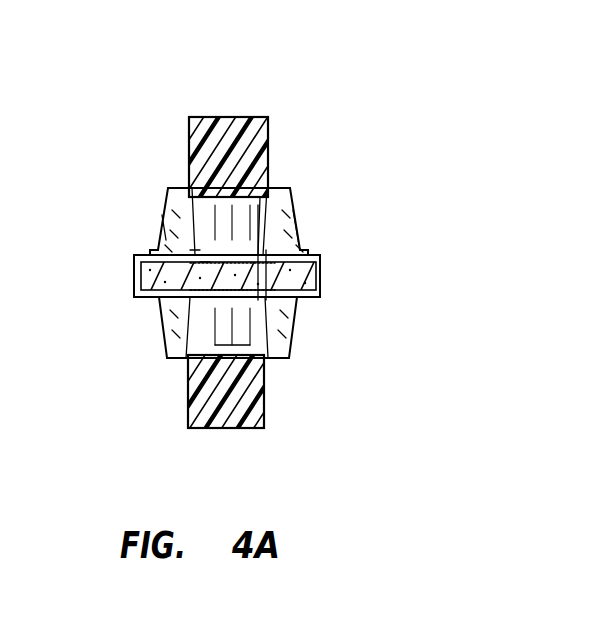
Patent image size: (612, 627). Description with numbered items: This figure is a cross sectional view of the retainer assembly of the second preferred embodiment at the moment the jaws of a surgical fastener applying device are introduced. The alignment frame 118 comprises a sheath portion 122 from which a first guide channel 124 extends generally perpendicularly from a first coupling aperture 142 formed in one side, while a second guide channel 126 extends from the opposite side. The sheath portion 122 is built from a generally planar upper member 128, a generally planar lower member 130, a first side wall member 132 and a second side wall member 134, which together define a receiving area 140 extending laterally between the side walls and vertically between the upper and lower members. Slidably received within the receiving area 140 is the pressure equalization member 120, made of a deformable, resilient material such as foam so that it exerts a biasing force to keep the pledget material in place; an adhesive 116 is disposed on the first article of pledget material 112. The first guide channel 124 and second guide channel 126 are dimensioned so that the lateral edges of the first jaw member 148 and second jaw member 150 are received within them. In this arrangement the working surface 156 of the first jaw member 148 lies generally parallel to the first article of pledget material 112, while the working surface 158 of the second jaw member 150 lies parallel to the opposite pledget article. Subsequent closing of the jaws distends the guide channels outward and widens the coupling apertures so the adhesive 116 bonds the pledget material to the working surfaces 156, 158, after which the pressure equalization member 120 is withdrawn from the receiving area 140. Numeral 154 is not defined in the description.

The first article of pledget material 112 is at (270, 256).
The adhesive 116 is at (257, 208).
The alignment frame 118 is at (302, 236).
The pressure equalization member 120 is at (318, 257).
The sheath portion 122 is at (322, 277).
The first guide channel 124 is at (165, 228).
The second guide channel 126 is at (160, 338).
The upper member 128 is at (150, 253).
The lower member 130 is at (147, 300).
The first side wall member 132 is at (135, 289).
The second side wall member 134 is at (318, 292).
The receiving area 140 is at (134, 272).
The first coupling aperture 142 is at (207, 200).
The first jaw member 148 is at (229, 117).
The second jaw member 150 is at (200, 428).
The gasket 154 is at (203, 236).
The working surface of the first jaw member 156 is at (196, 252).
The working surface of the second jaw member 158 is at (225, 343).